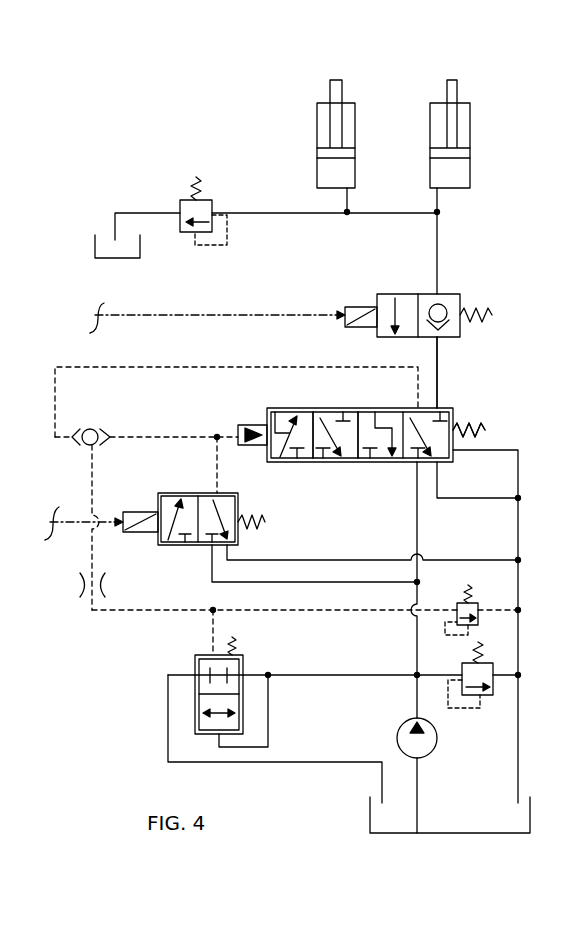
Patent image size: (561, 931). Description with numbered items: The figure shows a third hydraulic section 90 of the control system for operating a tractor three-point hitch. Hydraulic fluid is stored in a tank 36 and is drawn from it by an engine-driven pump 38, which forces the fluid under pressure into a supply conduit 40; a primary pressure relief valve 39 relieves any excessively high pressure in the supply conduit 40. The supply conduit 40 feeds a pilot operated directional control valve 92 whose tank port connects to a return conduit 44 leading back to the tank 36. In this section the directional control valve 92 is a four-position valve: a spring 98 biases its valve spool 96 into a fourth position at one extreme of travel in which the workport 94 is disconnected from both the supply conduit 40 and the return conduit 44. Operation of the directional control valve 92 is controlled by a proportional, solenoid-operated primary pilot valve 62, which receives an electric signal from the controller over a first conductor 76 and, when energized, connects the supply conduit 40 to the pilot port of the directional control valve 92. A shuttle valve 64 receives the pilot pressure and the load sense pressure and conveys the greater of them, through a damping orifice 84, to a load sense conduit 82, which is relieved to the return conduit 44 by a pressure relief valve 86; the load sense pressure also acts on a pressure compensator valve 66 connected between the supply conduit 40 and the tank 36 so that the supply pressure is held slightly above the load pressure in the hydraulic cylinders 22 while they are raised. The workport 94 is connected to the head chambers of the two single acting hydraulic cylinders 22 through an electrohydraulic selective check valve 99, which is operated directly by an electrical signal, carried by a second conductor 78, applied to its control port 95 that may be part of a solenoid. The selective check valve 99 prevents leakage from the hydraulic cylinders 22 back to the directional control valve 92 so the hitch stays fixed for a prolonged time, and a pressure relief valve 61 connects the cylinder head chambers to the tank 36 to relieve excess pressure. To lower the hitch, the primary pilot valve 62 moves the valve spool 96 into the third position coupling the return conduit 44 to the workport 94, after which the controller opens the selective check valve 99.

The third hydraulic section 90 is at (225, 136).
The pressure relief valve 61 is at (180, 205).
The tank 36 is at (120, 258).
The hydraulic cylinders 22 is at (317, 138).
The selective check valve 99 is at (410, 294).
The control port 95 is at (352, 307).
The second conductor 78 is at (167, 318).
The shuttle valve 64 is at (94, 425).
The directional control valve 92 is at (351, 468).
The valve spool 96 is at (367, 413).
The workport 94 is at (440, 403).
The spring 98 is at (483, 430).
The return conduit 44 is at (515, 510).
The supply conduit 40 is at (417, 645).
The primary pilot valve 62 is at (176, 493).
The first conductor 76 is at (82, 527).
The damping orifice 84 is at (104, 594).
The load sense conduit 82 is at (273, 613).
The pressure relief valve 86 is at (478, 607).
The pressure compensator valve 66 is at (195, 666).
The pump 38 is at (396, 738).
The primary pressure relief valve 39 is at (486, 697).